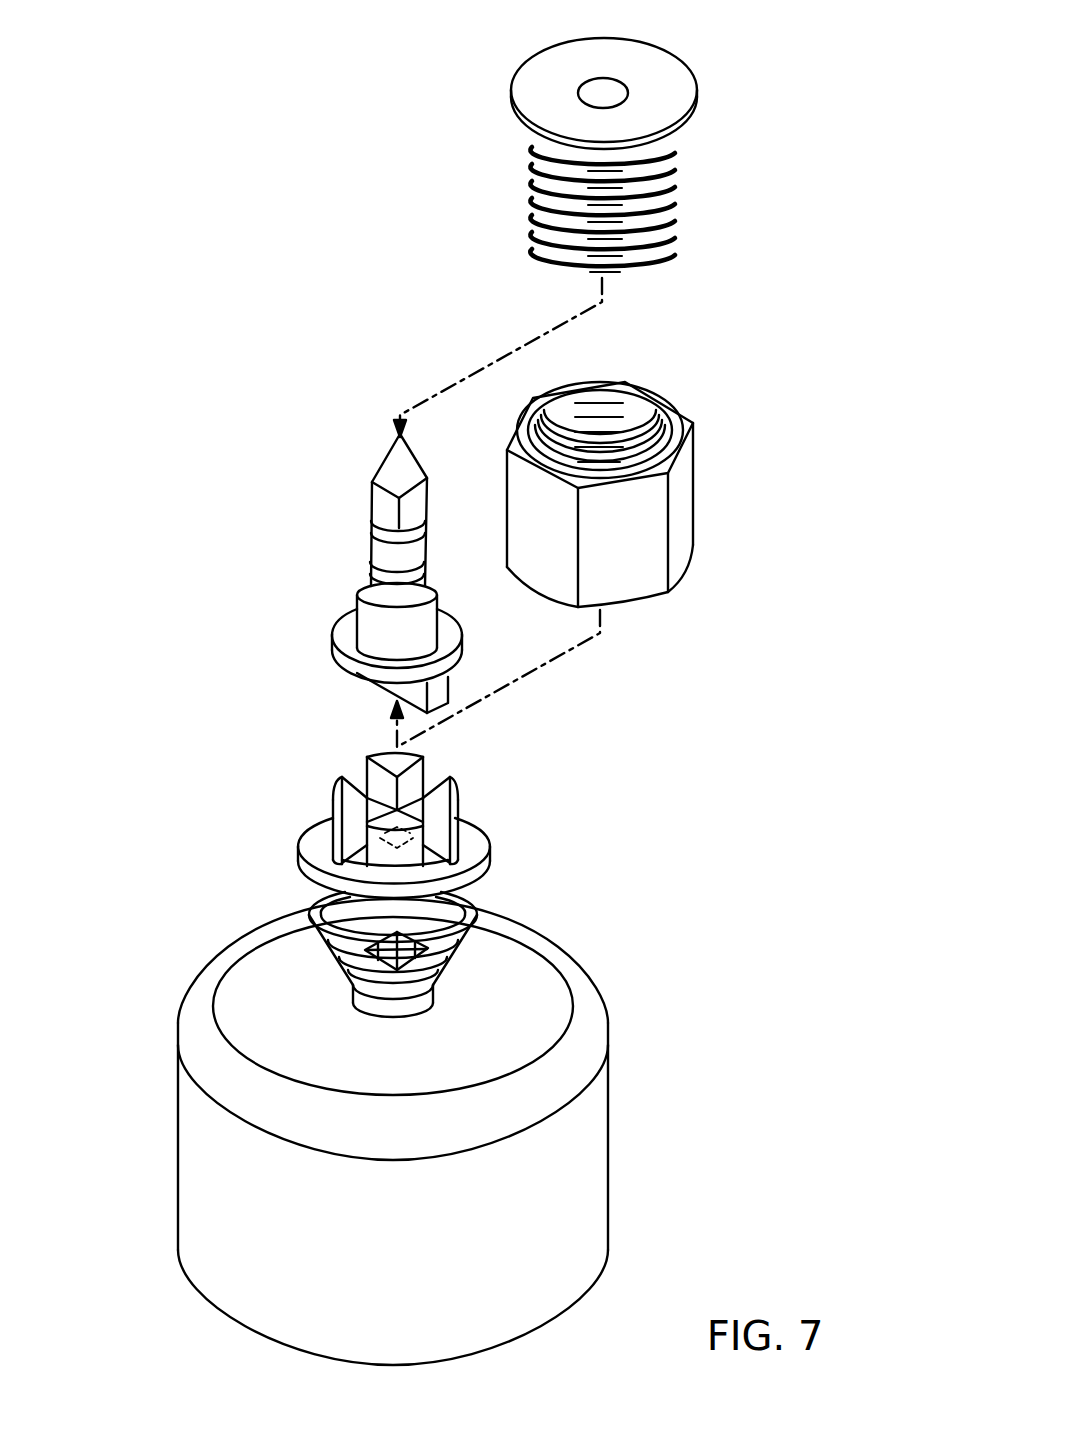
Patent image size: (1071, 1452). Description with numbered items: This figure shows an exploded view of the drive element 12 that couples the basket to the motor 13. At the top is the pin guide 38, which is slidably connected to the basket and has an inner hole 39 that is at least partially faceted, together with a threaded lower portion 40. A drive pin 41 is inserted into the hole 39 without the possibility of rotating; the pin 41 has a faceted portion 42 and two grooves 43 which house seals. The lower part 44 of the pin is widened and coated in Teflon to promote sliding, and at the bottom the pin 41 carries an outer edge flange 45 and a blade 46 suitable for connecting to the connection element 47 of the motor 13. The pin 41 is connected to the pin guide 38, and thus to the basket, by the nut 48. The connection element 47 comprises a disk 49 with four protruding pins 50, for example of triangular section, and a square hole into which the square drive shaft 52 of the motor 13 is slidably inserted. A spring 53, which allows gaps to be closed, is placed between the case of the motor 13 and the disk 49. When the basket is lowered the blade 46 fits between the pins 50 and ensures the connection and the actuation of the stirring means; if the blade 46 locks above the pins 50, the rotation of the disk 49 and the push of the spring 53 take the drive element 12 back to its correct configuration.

The drive element 12 is at (252, 407).
The motor 13 is at (566, 1083).
The pin guide 38 is at (698, 72).
The inner hole 39 is at (617, 97).
The threaded lower portion 40 is at (647, 235).
The drive pin 41 is at (432, 540).
The faceted portion 42 is at (413, 493).
The grooves 43 is at (377, 570).
The lower part 44 is at (370, 630).
The outer edge flange 45 is at (333, 650).
The blade 46 is at (393, 695).
The connection element 47 is at (293, 802).
The nut 48 is at (683, 553).
The disk 49 is at (318, 847).
The protruding pins 50 is at (417, 847).
The drive shaft 52 is at (360, 962).
The spring 53 is at (469, 933).